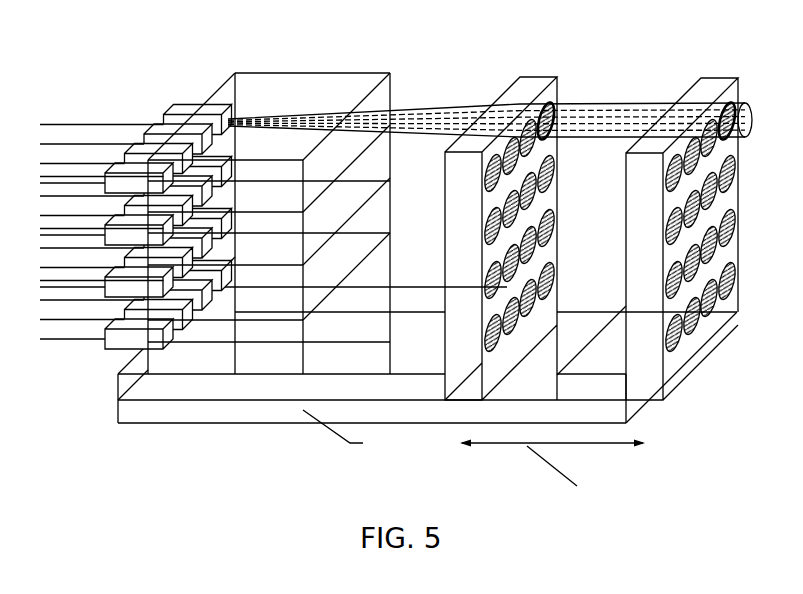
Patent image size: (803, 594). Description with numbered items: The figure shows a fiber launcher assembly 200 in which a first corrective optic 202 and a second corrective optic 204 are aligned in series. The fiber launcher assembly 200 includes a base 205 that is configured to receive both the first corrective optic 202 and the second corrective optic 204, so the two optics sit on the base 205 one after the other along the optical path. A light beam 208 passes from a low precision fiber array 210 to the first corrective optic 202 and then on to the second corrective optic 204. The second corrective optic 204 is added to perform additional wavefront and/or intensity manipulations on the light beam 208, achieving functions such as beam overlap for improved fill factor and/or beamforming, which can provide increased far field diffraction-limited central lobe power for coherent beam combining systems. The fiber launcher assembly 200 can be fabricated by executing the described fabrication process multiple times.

The fiber launcher assembly 200 is at (100, 50).
The first corrective optic 202 is at (541, 78).
The second corrective optic 204 is at (724, 78).
The base 205 is at (252, 424).
The light beam 208 is at (443, 105).
The low precision fiber array 210 is at (315, 73).